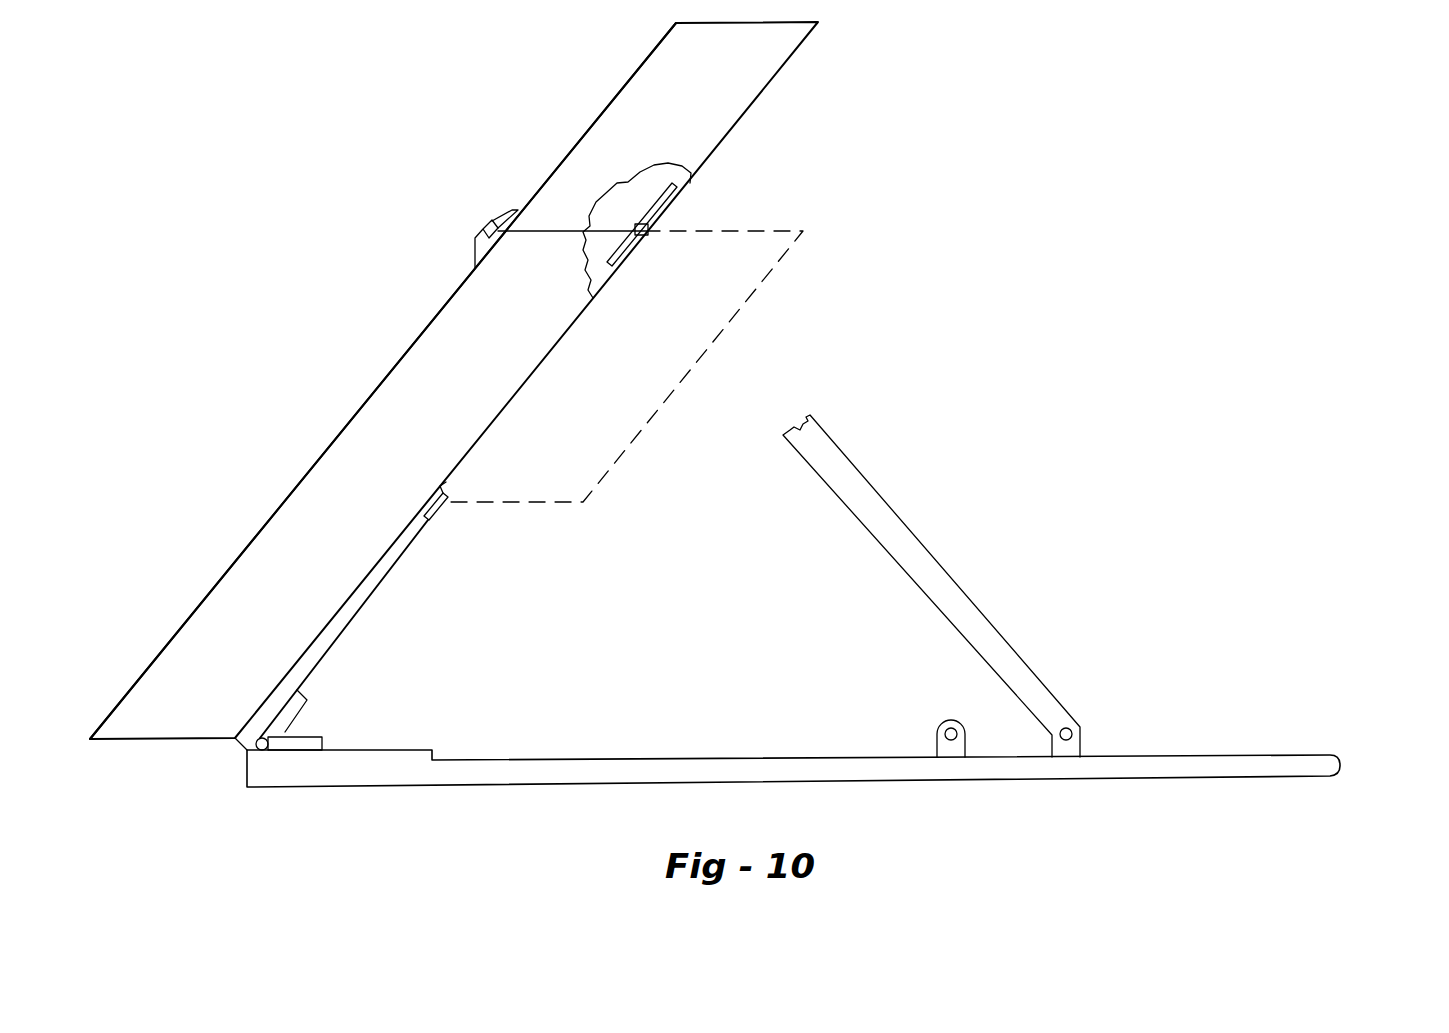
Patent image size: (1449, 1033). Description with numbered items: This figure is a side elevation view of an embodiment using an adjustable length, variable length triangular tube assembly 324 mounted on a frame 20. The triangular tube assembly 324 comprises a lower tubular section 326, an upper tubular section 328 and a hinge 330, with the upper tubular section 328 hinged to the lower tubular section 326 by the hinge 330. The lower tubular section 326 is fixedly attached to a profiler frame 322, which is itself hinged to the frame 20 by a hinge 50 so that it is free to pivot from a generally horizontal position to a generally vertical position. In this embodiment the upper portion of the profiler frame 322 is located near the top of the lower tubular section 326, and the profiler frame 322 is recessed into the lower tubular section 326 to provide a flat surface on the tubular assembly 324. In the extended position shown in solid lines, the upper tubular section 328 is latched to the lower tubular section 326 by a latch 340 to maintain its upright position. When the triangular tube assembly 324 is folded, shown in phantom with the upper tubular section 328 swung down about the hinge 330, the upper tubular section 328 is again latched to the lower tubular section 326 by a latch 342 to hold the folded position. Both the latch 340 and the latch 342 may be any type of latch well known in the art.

The frame 20 is at (1328, 768).
The hinge 50 is at (289, 718).
The profiler frame 322 is at (365, 608).
The triangular tube assembly 324 is at (215, 527).
The lower tubular section 326 is at (390, 372).
The upper tubular section 328 is at (696, 78).
The hinge 330 is at (673, 196).
The latch 340 is at (482, 231).
The latch 342 is at (436, 505).